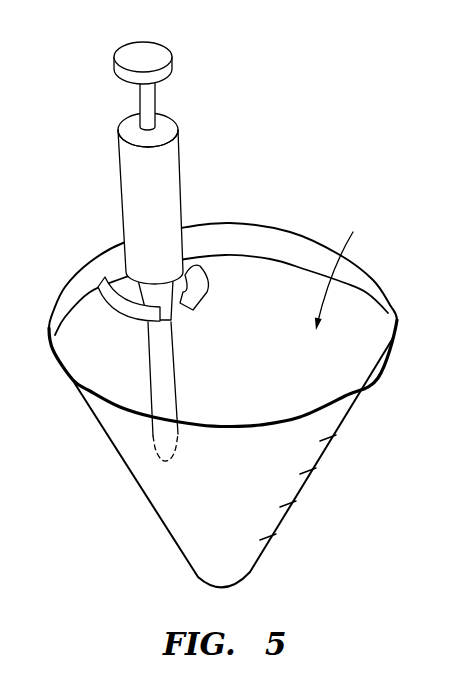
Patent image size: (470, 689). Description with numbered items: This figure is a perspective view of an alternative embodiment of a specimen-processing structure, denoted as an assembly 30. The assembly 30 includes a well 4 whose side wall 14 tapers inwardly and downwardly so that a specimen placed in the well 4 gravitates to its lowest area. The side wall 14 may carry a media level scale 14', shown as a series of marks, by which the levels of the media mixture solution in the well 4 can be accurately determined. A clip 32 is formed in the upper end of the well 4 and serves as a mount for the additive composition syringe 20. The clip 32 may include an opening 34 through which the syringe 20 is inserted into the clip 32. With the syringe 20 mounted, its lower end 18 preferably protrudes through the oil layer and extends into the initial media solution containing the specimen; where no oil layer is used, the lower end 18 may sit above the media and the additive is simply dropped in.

The well 4 is at (344, 269).
The side wall 14 is at (247, 428).
The media level scale 14' is at (334, 487).
The lower end 18 is at (154, 439).
The additive composition syringe 20 is at (121, 179).
The assembly 30 is at (294, 229).
The clip 32 is at (208, 290).
The opening 34 is at (181, 314).